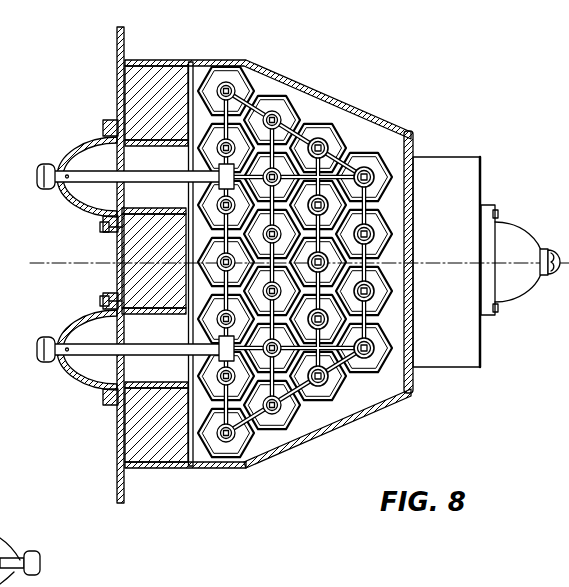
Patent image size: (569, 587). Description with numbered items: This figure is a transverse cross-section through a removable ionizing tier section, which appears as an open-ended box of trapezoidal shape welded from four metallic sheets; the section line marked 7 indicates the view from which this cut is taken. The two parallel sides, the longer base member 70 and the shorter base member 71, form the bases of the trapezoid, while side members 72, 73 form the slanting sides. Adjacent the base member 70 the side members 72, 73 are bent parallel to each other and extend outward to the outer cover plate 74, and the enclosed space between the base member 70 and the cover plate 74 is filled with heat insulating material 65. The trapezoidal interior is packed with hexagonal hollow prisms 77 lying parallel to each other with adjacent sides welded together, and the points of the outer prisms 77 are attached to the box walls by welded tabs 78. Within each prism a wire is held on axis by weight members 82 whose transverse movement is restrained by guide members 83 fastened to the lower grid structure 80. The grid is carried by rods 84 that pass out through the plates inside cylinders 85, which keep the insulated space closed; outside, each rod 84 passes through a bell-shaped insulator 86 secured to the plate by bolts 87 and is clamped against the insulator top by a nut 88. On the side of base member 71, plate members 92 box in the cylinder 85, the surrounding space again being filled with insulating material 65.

The section view arrow 7 is at (53, 262).
The heat insulating material 65 is at (137, 95).
The base member 70 is at (210, 468).
The base member 71 is at (398, 403).
The side member 72 is at (300, 442).
The side member 73 is at (282, 108).
The outer cover plate 74 is at (126, 488).
The hexagonal hollow prism 77 is at (361, 379).
The welded tab 78 is at (194, 88).
The lower grid structure 80 is at (343, 150).
The weight member 82 is at (374, 160).
The guide member 83 is at (293, 116).
The rod 84 is at (97, 180).
The cylinder 85 is at (143, 213).
The bell-shaped insulator 86 is at (68, 198).
The bolt 87 is at (105, 298).
The nut 88 is at (36, 184).
The plate member 92 is at (450, 163).